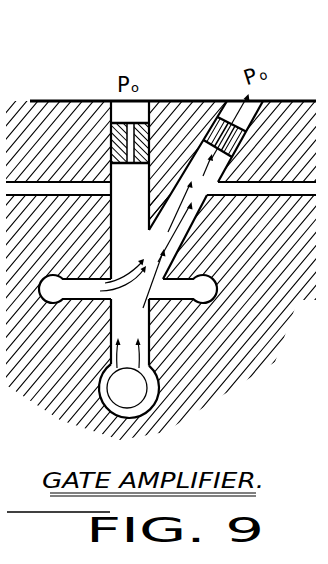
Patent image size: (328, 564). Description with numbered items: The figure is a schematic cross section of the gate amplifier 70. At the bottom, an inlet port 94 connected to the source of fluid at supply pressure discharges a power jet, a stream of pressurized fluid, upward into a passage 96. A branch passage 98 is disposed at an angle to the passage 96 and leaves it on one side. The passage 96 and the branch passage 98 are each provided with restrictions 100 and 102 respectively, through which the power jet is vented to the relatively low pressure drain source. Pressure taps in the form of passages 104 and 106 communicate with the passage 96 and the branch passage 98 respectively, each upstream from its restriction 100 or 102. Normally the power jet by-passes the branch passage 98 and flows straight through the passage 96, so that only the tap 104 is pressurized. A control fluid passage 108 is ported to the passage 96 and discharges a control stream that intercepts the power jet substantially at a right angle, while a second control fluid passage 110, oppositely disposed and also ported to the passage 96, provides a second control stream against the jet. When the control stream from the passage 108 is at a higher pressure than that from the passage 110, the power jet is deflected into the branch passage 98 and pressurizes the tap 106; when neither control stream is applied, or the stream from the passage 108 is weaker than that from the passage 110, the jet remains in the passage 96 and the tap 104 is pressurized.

The gate amplifier 70 is at (196, 92).
The inlet port 94 is at (154, 380).
The passage 96 is at (152, 343).
The branch passage 98 is at (182, 240).
The restriction 100 is at (114, 141).
The restriction 102 is at (248, 133).
The pressure tap passage 104 is at (72, 180).
The pressure tap passage 106 is at (237, 180).
The control fluid passage 108 is at (66, 300).
The second control fluid passage 110 is at (174, 303).